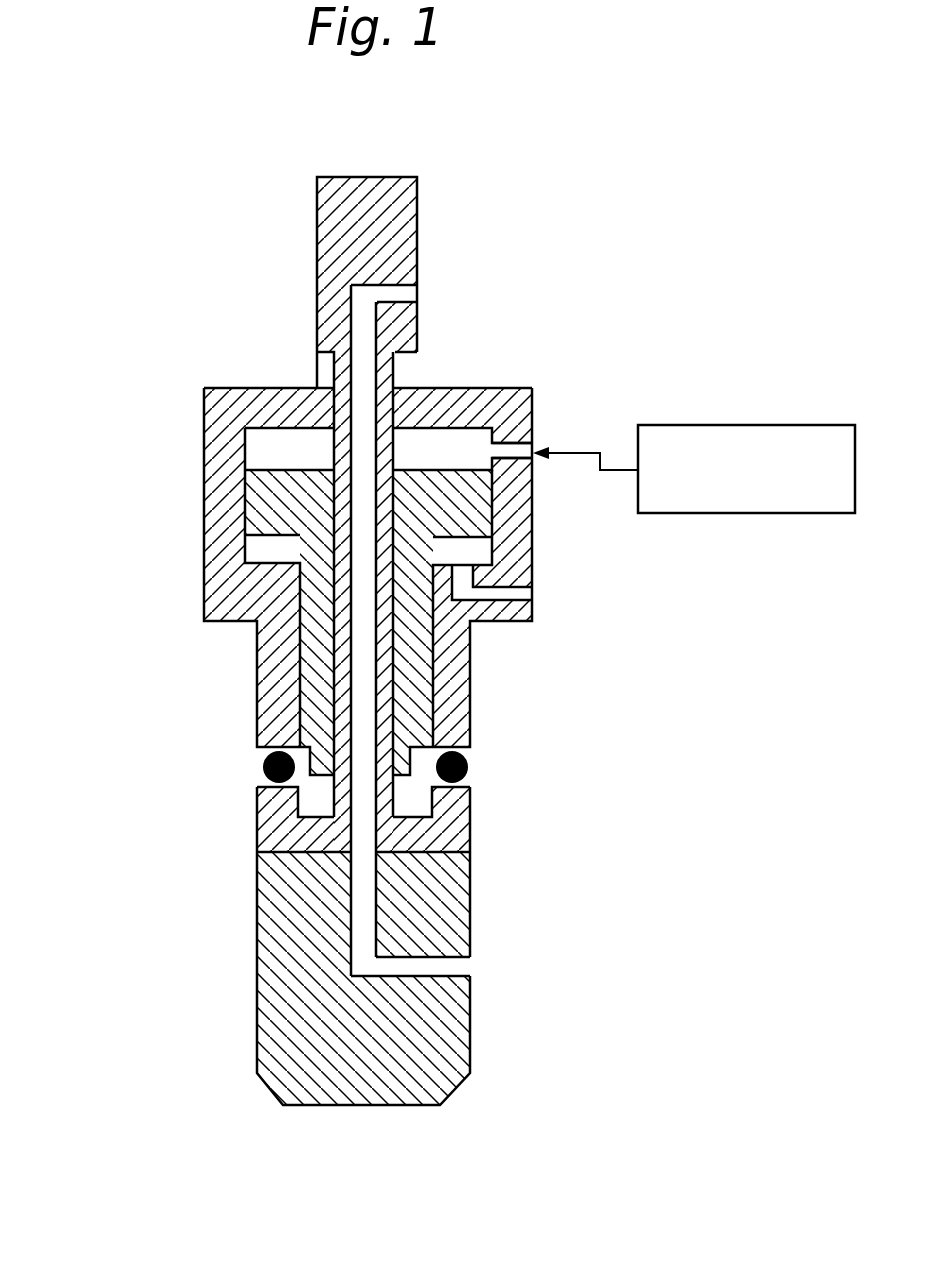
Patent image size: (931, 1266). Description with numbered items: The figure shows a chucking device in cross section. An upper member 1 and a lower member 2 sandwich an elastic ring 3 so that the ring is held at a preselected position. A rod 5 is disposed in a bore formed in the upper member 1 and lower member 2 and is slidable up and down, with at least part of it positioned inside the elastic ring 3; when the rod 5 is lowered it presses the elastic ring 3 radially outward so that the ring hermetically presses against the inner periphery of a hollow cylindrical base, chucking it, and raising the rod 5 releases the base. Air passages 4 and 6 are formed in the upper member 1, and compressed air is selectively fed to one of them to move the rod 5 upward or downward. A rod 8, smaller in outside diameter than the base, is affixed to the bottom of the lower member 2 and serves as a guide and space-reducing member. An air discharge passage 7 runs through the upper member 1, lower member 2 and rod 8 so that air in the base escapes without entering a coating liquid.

The upper member 1 is at (317, 290).
The lower member 2 is at (455, 813).
The elastic ring 3 is at (262, 765).
The air passage 4 is at (517, 593).
The rod 5 is at (268, 477).
The air passage 6 is at (525, 450).
The air discharge passage 7 is at (452, 968).
The rod 8 is at (260, 967).